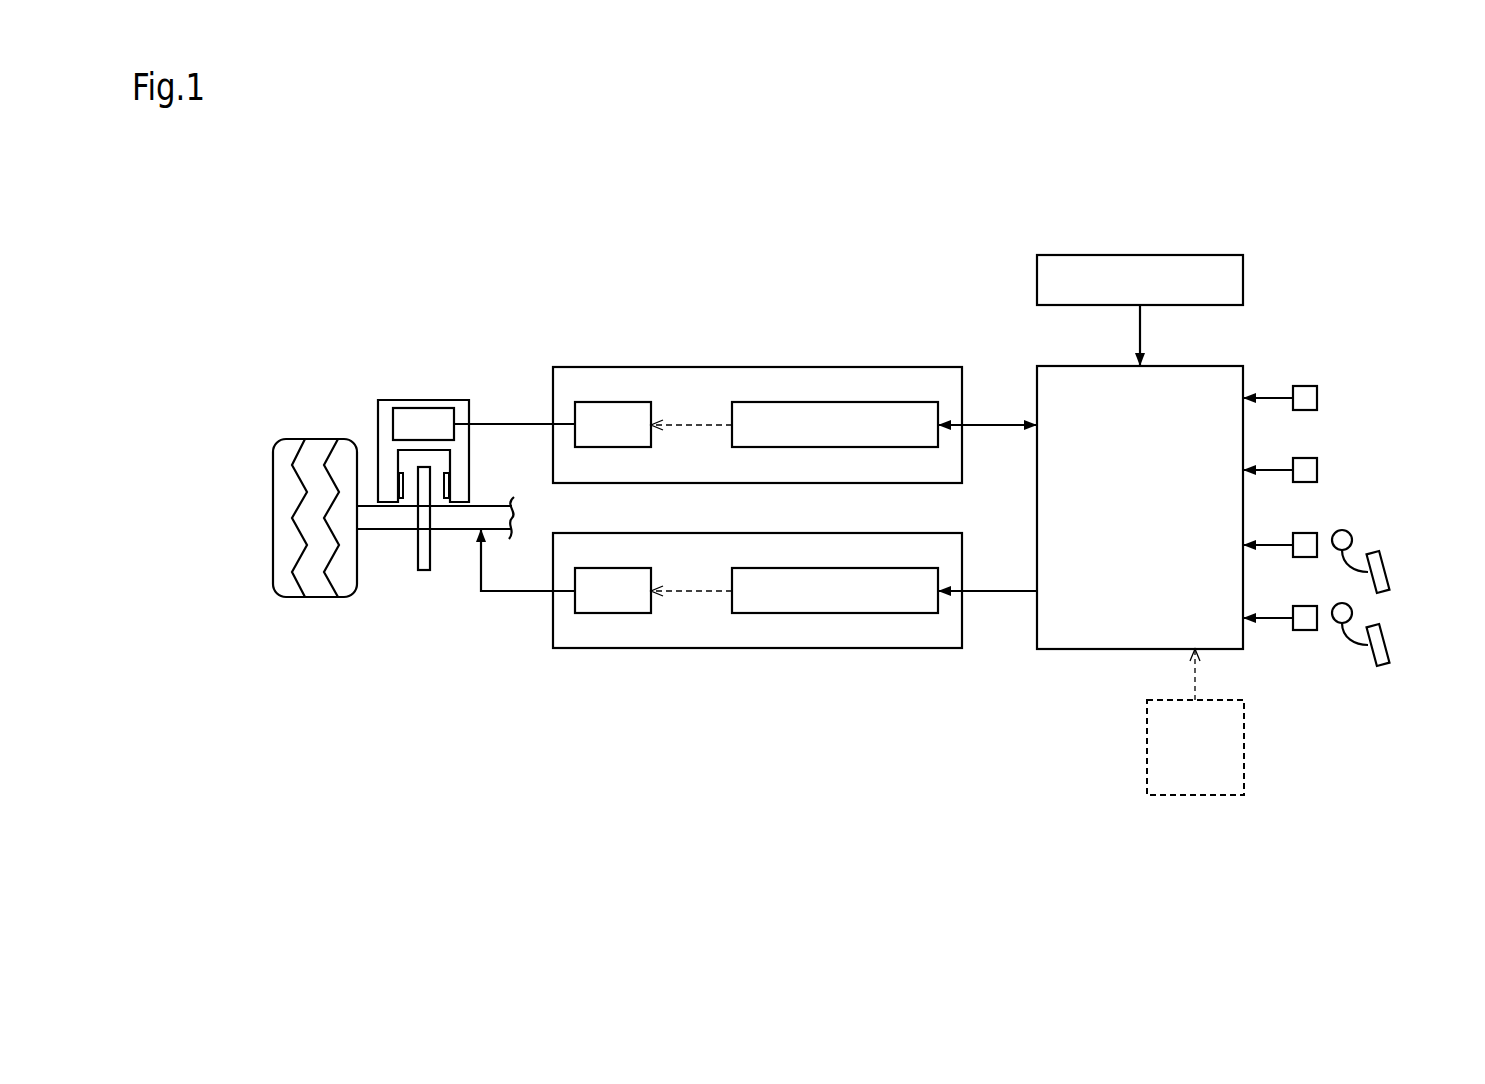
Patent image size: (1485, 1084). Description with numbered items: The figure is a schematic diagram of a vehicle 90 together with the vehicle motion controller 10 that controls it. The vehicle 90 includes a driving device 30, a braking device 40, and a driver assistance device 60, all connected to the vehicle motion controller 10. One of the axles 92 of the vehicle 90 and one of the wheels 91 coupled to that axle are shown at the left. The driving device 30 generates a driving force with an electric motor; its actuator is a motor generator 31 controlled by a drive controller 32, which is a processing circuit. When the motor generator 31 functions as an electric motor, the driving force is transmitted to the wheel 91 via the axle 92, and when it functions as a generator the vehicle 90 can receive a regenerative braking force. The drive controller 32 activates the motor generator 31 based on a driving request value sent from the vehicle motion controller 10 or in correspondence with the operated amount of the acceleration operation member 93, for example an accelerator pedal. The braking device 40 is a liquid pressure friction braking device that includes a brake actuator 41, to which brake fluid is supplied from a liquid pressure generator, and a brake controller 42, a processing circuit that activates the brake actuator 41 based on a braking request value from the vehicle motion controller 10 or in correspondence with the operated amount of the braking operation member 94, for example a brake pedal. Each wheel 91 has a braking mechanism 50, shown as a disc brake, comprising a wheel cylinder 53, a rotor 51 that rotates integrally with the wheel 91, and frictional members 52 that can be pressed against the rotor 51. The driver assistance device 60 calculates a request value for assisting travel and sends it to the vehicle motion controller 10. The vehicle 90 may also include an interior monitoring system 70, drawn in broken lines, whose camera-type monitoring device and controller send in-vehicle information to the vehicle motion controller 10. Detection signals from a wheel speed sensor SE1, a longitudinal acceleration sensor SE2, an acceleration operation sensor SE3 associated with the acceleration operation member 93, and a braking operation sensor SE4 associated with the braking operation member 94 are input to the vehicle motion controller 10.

The vehicle motion controller 10 is at (1185, 366).
The driving device 30 is at (758, 648).
The motor generator 31 is at (610, 568).
The drive controller 32 is at (882, 568).
The braking device 40 is at (757, 367).
The brake actuator 41 is at (610, 402).
The brake controller 42 is at (882, 402).
The braking mechanism 50 is at (365, 378).
The rotor 51 is at (425, 570).
The frictional members 52 is at (401, 474).
The wheel cylinder 53 is at (422, 408).
The driver assistance device 60 is at (1185, 255).
The interior monitoring system 70 is at (1244, 748).
The vehicle 90 is at (295, 255).
The wheel 91 is at (313, 597).
The axle 92 is at (392, 530).
The acceleration operation member 93 is at (1392, 564).
The braking operation member 94 is at (1392, 639).
The wheel speed sensor SE1 is at (1320, 393).
The longitudinal acceleration sensor SE2 is at (1320, 465).
The acceleration operation sensor SE3 is at (1305, 533).
The braking operation sensor SE4 is at (1305, 606).